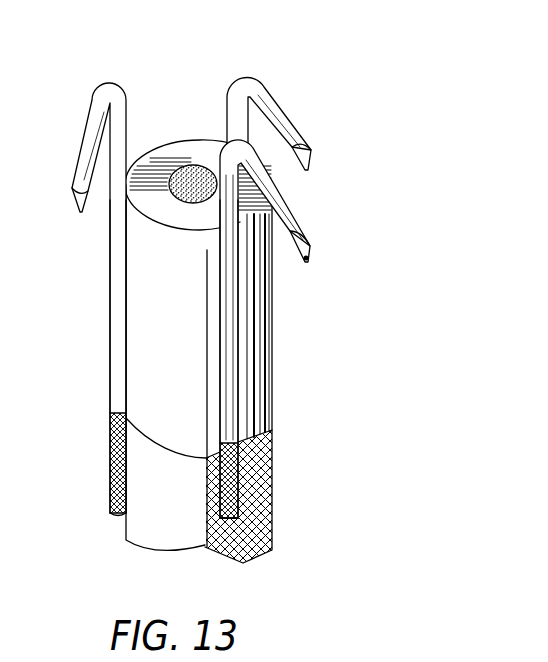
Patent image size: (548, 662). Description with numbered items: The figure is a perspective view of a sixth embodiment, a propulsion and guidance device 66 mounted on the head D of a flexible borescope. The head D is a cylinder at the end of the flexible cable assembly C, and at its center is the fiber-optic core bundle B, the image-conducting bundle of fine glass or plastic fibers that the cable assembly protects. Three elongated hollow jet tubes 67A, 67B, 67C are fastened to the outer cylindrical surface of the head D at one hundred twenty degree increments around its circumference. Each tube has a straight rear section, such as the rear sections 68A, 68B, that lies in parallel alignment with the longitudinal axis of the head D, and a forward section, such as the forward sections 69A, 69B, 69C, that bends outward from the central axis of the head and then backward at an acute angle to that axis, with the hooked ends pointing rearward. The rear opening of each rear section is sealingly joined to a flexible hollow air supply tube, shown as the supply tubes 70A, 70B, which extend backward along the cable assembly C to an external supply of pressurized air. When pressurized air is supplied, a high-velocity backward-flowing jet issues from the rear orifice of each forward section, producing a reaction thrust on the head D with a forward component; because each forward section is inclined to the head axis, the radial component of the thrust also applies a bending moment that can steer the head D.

The propulsion and guidance device 66 is at (192, 287).
The jet tube 67A is at (306, 329).
The jet tube 67B is at (68, 290).
The jet tube 67C is at (299, 102).
The straight rear section 68A is at (233, 342).
The straight rear section 68B is at (113, 372).
The forward section 69A is at (312, 222).
The forward section 69B is at (78, 168).
The forward section 69C is at (312, 140).
The air supply tube 70A is at (272, 472).
The air supply tube 70B is at (112, 458).
The central core B is at (187, 168).
The cable assembly C is at (135, 507).
The head D is at (135, 297).